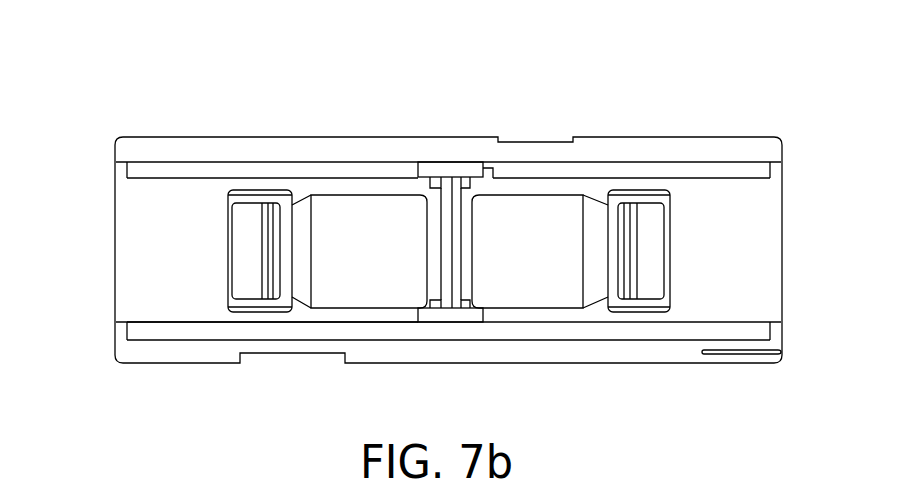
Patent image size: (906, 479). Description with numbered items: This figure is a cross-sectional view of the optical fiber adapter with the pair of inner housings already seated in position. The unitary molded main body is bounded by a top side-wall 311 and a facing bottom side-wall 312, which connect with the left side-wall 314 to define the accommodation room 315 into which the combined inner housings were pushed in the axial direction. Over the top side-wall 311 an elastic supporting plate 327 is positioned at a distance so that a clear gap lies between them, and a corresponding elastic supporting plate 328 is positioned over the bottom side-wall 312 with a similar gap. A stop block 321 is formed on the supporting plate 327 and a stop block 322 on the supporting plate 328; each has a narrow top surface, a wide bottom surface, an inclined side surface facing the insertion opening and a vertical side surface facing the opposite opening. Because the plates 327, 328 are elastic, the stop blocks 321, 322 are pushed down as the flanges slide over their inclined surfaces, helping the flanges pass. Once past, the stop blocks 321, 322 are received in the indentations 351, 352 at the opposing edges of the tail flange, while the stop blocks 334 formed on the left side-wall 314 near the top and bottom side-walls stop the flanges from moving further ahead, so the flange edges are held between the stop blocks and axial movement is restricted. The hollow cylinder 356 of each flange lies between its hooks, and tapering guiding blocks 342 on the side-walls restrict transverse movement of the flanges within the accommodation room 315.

The top side-wall 311 is at (146, 150).
The bottom side-wall 312 is at (153, 350).
The left side-wall 314 is at (153, 245).
The accommodation room 315 is at (197, 286).
The stop block 321 is at (437, 176).
The stop block 322 is at (437, 317).
The elastic supporting plate 327 is at (422, 174).
The elastic supporting plate 328 is at (422, 325).
The stop block 334 is at (483, 185).
The guiding block 342 is at (415, 186).
The indentation 351 is at (466, 178).
The indentation 352 is at (467, 318).
The hollow cylinder 356 is at (327, 240).